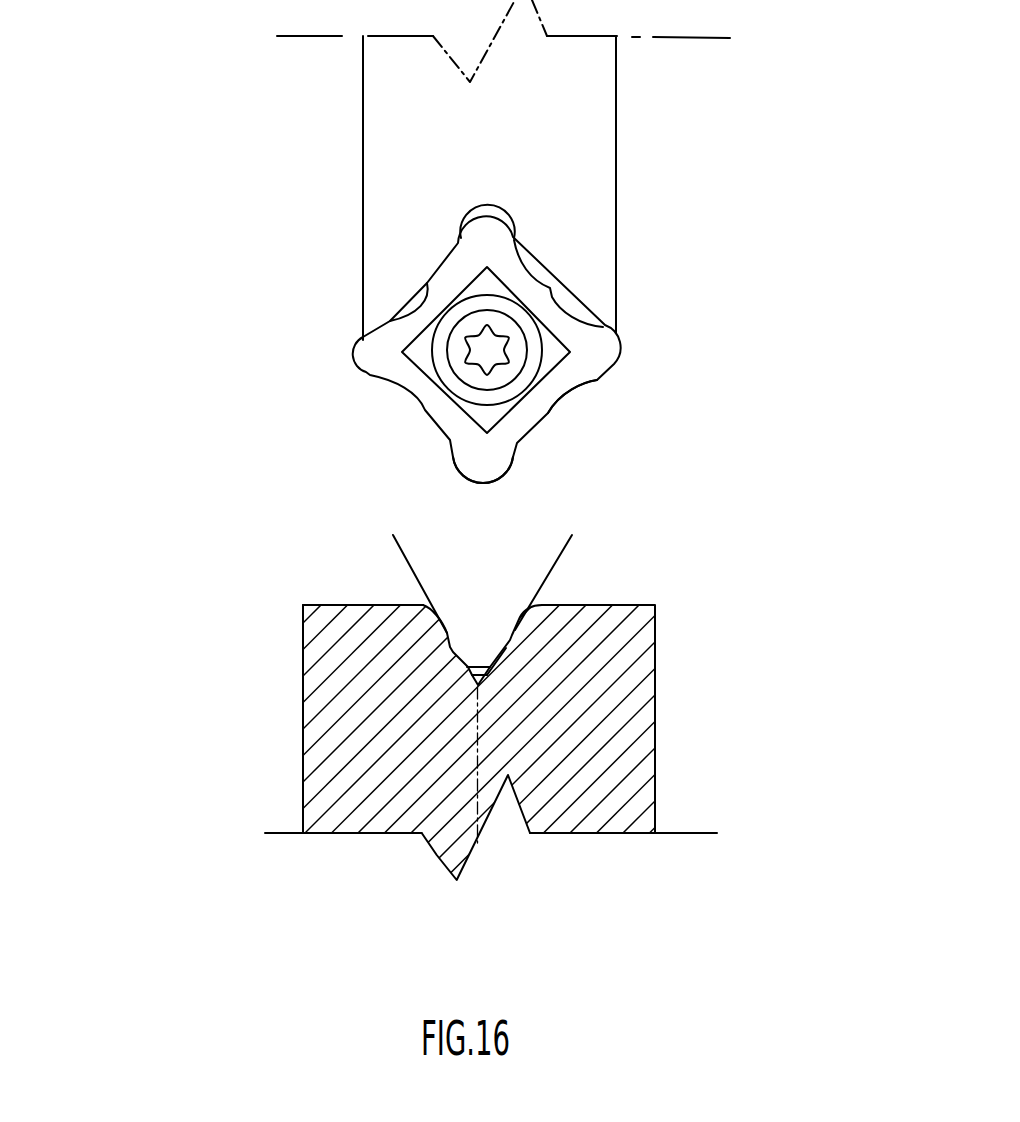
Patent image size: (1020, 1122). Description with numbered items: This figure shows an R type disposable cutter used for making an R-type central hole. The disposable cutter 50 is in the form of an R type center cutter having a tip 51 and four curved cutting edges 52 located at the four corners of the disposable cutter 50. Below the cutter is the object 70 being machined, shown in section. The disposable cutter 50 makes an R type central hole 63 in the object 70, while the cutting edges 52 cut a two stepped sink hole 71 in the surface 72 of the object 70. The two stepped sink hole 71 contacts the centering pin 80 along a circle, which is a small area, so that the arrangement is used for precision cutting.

The disposable cutter 50 is at (552, 344).
The tip 51 is at (490, 457).
The curved cutting edges 52 is at (535, 437).
The R type central hole 63 is at (470, 612).
The object 70 is at (327, 715).
The two stepped sink hole 71 is at (482, 650).
The surface 72 is at (347, 604).
The centering pin 80 is at (398, 555).